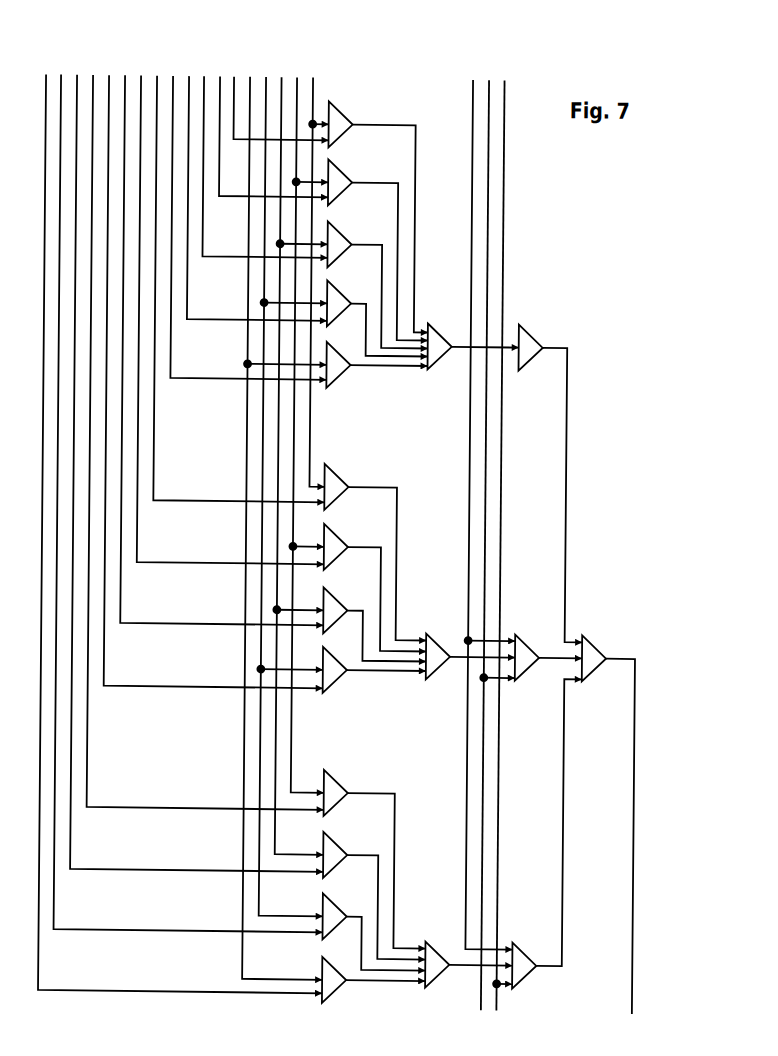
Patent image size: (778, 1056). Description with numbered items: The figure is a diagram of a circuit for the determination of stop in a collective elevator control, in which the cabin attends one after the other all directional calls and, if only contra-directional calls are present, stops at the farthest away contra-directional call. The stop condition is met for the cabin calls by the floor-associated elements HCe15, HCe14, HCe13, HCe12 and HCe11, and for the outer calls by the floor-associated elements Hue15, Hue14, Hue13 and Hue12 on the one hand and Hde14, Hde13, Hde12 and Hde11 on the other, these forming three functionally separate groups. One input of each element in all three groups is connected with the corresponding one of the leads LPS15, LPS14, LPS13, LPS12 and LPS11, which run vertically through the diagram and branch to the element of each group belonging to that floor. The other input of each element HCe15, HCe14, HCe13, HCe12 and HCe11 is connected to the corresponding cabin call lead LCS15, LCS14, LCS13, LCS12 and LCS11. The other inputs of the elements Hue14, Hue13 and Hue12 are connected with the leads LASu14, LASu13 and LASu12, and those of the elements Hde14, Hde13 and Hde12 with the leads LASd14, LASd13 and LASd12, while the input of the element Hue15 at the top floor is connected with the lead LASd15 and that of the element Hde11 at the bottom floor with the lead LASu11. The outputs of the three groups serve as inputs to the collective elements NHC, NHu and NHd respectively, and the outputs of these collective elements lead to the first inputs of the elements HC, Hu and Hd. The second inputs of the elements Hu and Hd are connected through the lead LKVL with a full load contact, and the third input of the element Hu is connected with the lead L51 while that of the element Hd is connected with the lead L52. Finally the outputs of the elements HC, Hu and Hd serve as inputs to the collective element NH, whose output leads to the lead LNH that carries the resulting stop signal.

The lead LASu11 is at (180, 503).
The lead LASd12 is at (188, 472).
The lead LASd13 is at (196, 443).
The lead LASd14 is at (204, 412).
The lead LASu12 is at (212, 351).
The lead LASu13 is at (219, 319).
The lead LASu14 is at (228, 288).
The lead LASd15 is at (236, 259).
The lead LCS11 is at (245, 205).
The lead LCS12 is at (254, 175).
The lead LCS13 is at (261, 143).
The lead LCS14 is at (269, 113).
The lead LCS15 is at (277, 85).
The lead LPS11 is at (281, 507).
The lead LPS12 is at (290, 475).
The lead LPS13 is at (298, 444).
The lead LPS14 is at (306, 413).
The lead LPS15 is at (314, 260).
The lead LKVL is at (488, 488).
The lead L51 is at (496, 527).
The lead L52 is at (503, 527).
The lead LNH is at (622, 992).
The floor-associated element HCe15 is at (343, 119).
The floor-associated element HCe14 is at (343, 177).
The floor-associated element HCe13 is at (343, 239).
The floor-associated element HCe12 is at (341, 298).
The floor-associated element HCe11 is at (346, 368).
The collective element NHC is at (437, 330).
The element HC is at (527, 331).
The floor-associated element Hue15 is at (352, 472).
The floor-associated element Hue14 is at (350, 534).
The floor-associated element Hue13 is at (348, 594).
The floor-associated element Hue12 is at (345, 673).
The collective element NHu is at (438, 640).
The element Hu is at (527, 640).
The collective element NH is at (594, 640).
The floor-associated element Hde14 is at (344, 786).
The floor-associated element Hde13 is at (344, 849).
The floor-associated element Hde12 is at (343, 909).
The floor-associated element Hde11 is at (346, 983).
The collective element NHd is at (440, 949).
The element Hd is at (527, 949).